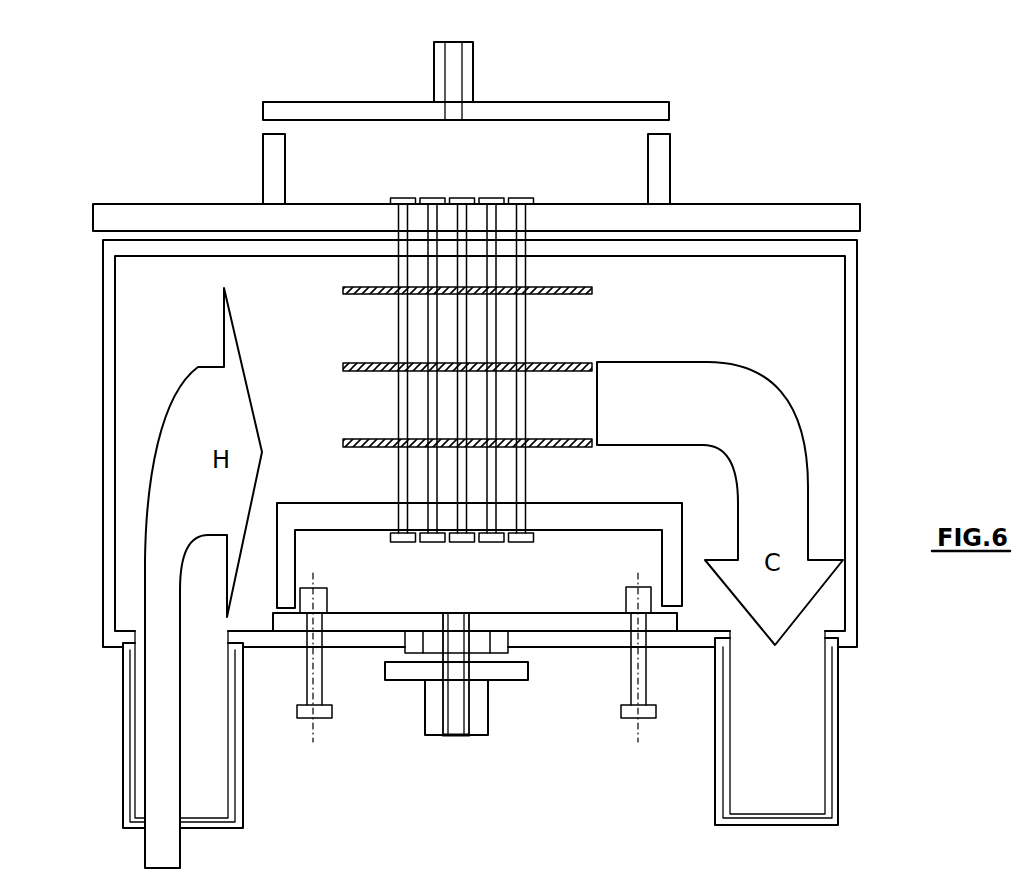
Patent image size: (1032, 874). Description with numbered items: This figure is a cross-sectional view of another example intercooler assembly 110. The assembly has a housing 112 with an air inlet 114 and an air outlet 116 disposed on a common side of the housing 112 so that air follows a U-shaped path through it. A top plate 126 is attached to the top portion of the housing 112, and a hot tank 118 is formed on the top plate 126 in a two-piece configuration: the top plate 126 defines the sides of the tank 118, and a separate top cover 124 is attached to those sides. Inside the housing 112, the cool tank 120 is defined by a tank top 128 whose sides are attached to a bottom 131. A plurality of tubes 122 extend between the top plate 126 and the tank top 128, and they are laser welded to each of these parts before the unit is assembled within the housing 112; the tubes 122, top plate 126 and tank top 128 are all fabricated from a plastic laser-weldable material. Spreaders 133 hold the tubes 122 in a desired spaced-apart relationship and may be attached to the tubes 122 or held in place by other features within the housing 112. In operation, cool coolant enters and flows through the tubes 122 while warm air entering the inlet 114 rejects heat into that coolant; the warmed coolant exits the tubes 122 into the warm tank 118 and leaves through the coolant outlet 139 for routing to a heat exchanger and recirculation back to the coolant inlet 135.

The intercooler assembly 110 is at (873, 70).
The housing 112 is at (850, 322).
The inlet 114 is at (123, 800).
The outlet 116 is at (800, 753).
The hot tank 118 is at (680, 157).
The cool tank 120 is at (320, 490).
The tubes 122 is at (578, 317).
The top cover 124 is at (580, 108).
The top plate 126 is at (857, 220).
The tank top 128 is at (560, 522).
The bottom 131 is at (570, 625).
The spreaders 133 is at (560, 289).
The inlet 135 is at (452, 708).
The outlet 139 is at (455, 78).